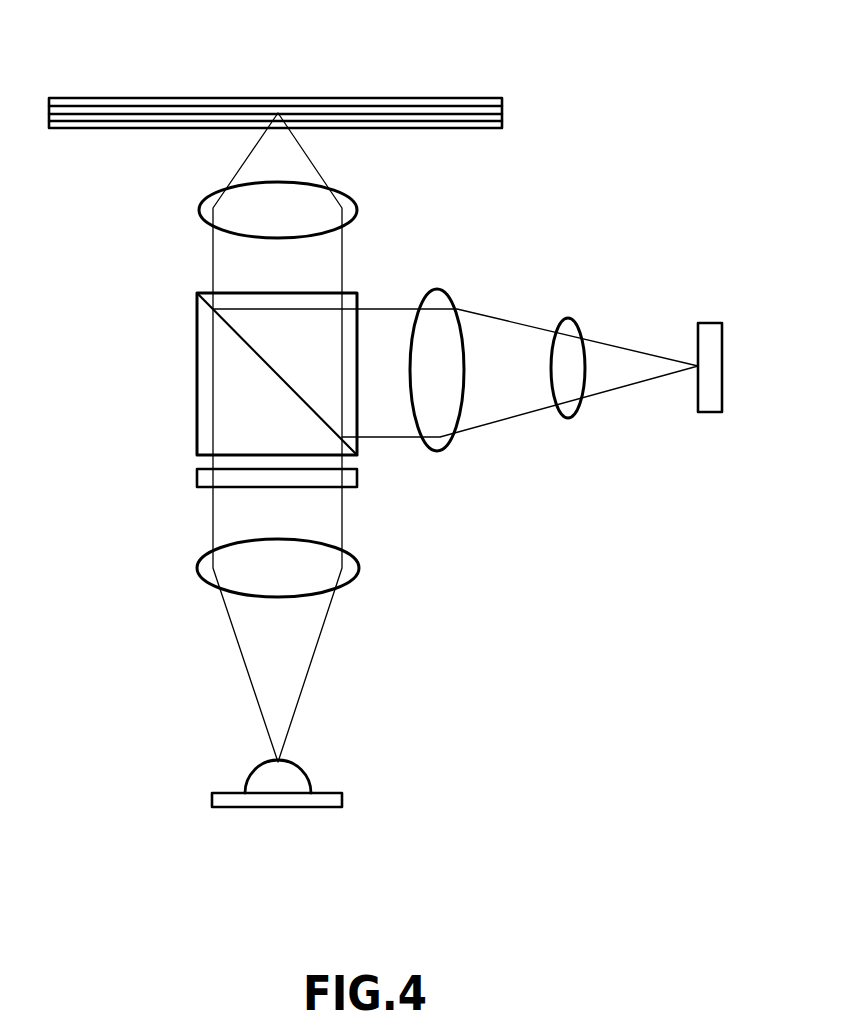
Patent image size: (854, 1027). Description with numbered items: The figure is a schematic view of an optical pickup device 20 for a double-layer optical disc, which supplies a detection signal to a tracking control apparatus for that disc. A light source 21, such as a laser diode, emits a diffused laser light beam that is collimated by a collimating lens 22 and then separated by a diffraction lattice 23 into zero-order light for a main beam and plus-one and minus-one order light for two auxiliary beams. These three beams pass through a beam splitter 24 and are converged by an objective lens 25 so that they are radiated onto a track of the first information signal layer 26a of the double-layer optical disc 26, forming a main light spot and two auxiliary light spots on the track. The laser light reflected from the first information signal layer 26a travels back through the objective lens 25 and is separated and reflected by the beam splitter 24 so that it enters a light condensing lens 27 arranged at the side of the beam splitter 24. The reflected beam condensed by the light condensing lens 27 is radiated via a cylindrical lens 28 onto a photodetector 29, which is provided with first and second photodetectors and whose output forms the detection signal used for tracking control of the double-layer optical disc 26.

The optical pickup / reproducing apparatus 20 is at (618, 221).
The light source 21 is at (308, 772).
The collimating lens 22 is at (205, 568).
The diffraction lattice 23 is at (205, 480).
The beam splitter 24 is at (350, 300).
The objective lens 25 is at (207, 210).
The double-layer optical disc 26 is at (447, 90).
The first information signal layer 26a is at (408, 114).
The light condensing lens 27 is at (440, 442).
The cylindrical lens 28 is at (570, 328).
The photodetector 29 is at (712, 353).